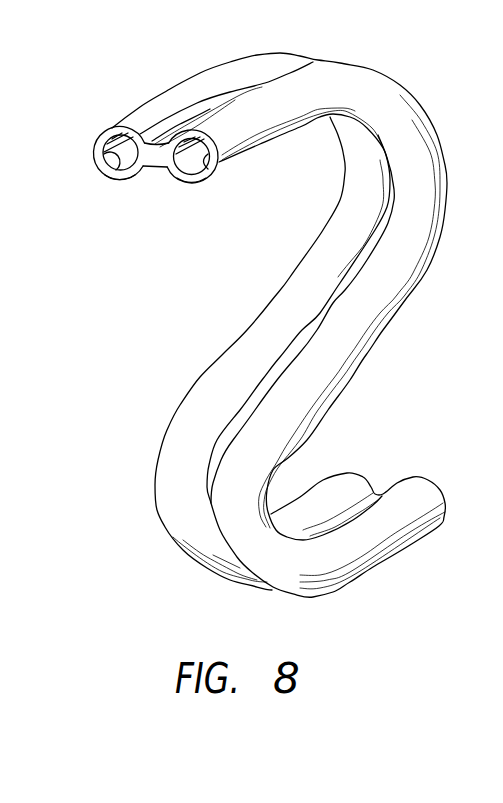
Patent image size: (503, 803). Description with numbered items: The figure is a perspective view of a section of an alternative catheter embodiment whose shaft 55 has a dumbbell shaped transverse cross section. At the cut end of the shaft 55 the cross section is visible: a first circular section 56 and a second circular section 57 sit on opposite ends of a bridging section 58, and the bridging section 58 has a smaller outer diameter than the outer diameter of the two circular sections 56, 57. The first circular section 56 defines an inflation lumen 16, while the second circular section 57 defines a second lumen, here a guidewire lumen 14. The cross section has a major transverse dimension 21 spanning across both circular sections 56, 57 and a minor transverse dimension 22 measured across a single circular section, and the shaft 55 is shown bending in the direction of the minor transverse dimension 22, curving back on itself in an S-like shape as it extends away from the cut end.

The shaft 55 is at (297, 325).
The major transverse dimension 21 is at (127, 127).
The minor transverse dimension 22 is at (92, 172).
The guidewire lumen 14 is at (108, 173).
The inflation lumen 16 is at (229, 188).
The first circular section 56 is at (190, 186).
The second circular section 57 is at (118, 180).
The bridging section 58 is at (155, 168).